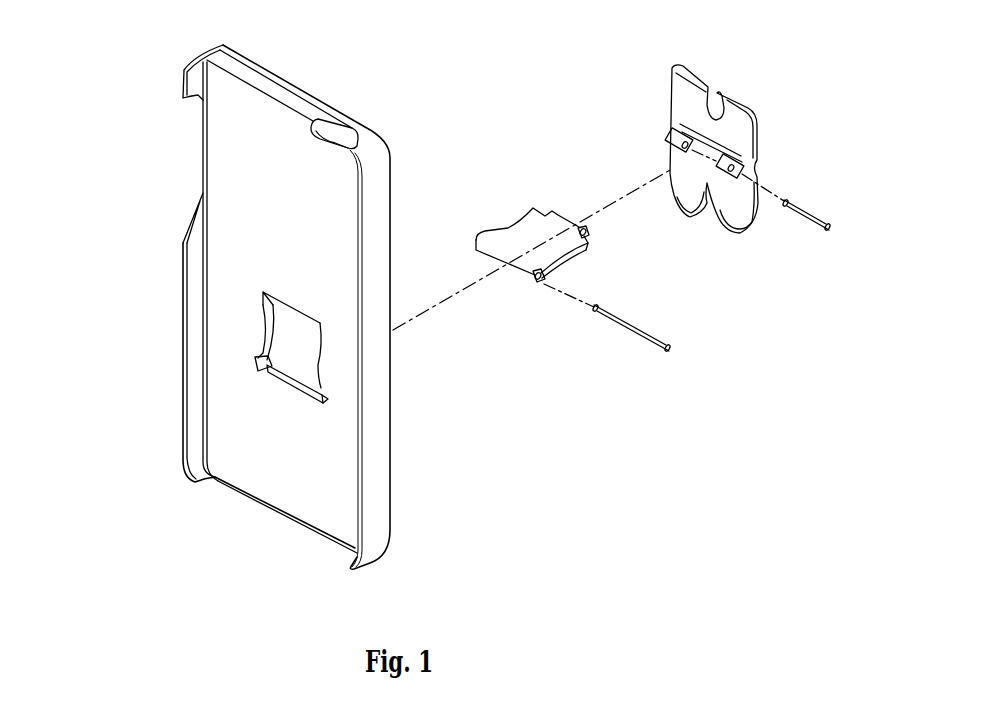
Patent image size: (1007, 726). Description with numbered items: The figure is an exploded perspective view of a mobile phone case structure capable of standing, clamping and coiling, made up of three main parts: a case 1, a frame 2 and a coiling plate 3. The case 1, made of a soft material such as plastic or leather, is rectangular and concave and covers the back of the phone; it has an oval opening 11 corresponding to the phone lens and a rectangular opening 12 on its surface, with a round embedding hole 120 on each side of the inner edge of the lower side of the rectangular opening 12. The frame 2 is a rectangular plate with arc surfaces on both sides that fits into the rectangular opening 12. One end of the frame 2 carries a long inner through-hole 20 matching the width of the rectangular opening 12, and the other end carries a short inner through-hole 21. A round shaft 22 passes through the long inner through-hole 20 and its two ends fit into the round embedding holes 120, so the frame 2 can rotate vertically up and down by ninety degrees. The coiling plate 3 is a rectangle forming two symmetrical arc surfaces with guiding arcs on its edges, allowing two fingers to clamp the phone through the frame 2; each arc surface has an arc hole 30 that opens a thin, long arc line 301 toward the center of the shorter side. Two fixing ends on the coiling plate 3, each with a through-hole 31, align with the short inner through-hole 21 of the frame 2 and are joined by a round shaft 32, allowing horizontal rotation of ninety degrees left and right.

The case 1 is at (390, 510).
The oval opening 11 is at (311, 134).
The rectangular opening 12 is at (303, 362).
The round embedding hole 120 is at (268, 373).
The frame 2 is at (510, 227).
The long inner through-hole 20 is at (539, 282).
The short inner through-hole 21 is at (586, 233).
The round shaft 22 is at (652, 350).
The coiling plate 3 is at (672, 98).
The arc hole 30 is at (733, 175).
The arc line 301 is at (717, 178).
The through-hole 31 is at (680, 126).
The round shaft 32 is at (813, 208).